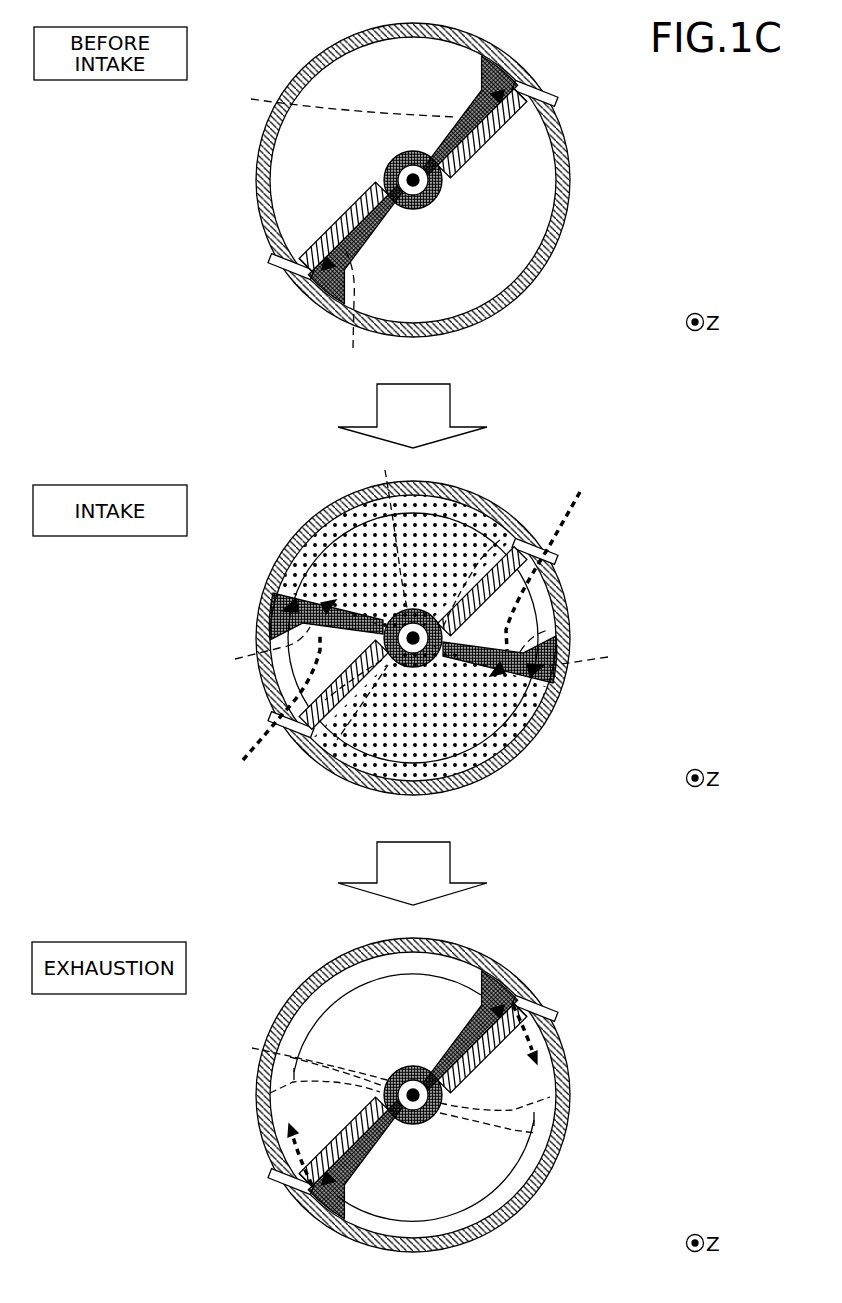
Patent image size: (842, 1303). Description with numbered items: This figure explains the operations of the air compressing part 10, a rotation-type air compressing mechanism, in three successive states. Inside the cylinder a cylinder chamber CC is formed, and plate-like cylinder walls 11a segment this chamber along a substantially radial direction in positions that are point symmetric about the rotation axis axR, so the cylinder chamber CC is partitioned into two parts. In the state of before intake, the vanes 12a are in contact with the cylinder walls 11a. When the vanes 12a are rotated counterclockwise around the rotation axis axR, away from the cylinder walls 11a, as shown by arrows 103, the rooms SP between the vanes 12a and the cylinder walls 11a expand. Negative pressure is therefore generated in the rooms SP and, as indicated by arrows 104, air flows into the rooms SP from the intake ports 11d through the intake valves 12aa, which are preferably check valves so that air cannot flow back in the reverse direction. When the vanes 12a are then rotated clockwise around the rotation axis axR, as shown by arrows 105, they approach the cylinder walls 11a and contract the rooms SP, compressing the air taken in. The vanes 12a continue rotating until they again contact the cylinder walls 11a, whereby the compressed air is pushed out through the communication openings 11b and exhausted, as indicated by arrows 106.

The air compressing part 10 is at (252, 72).
The cylinder chamber CC is at (326, 93).
The vanes 12a is at (485, 58).
The intake valves 12aa is at (420, 381).
The rotation axis axR is at (387, 163).
The cylinder walls 11a is at (488, 147).
The communication openings 11b is at (520, 100).
The intake ports 11d is at (552, 91).
The arrows 103 is at (334, 540).
The arrows 104 is at (218, 759).
The arrows 105 is at (343, 993).
The arrows 106 is at (530, 1050).
The rooms SP is at (453, 511).